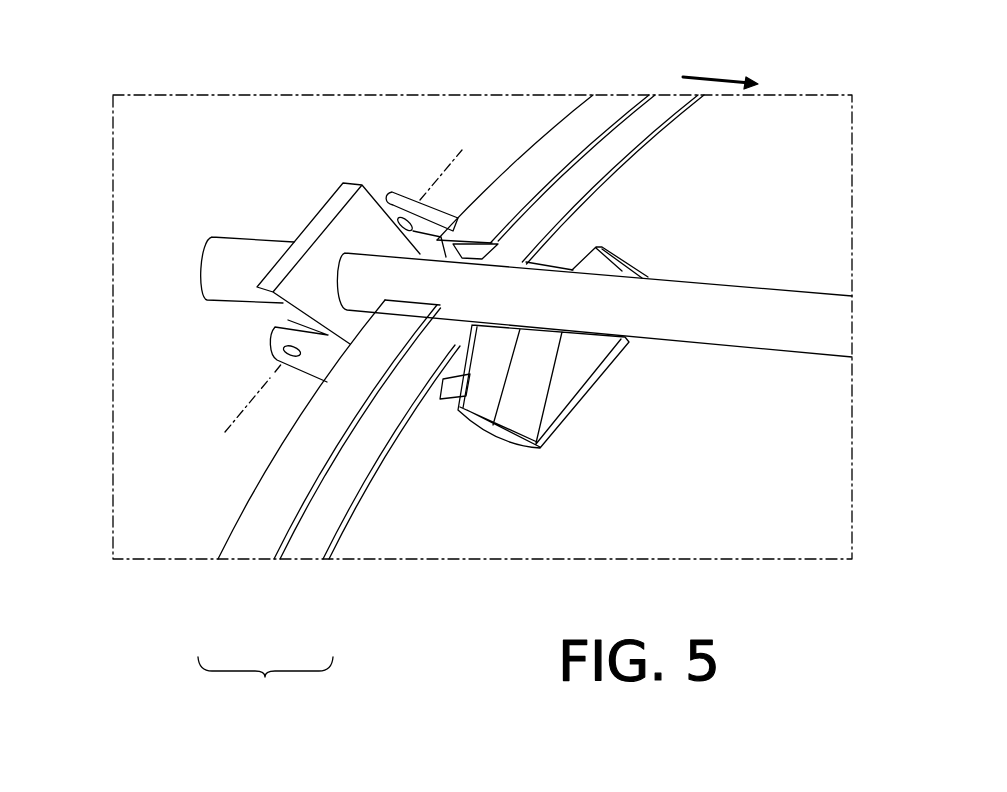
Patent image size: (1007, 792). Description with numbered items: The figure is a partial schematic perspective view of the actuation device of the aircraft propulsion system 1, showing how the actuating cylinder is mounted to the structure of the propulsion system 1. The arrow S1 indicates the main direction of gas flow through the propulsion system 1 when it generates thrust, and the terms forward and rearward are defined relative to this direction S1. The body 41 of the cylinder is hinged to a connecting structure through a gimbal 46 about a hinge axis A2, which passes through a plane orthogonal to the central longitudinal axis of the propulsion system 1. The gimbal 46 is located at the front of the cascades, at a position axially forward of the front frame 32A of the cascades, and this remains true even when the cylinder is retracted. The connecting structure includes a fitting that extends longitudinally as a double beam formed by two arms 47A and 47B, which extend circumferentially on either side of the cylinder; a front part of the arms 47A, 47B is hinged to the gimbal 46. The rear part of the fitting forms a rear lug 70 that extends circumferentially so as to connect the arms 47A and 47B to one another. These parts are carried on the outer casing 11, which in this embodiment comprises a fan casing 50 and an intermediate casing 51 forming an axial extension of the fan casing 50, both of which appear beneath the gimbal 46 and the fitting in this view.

The aircraft propulsion system 1 is at (200, 86).
The outer casing 11 is at (265, 680).
The front frame 32A is at (529, 165).
The body 41 is at (758, 330).
The gimbal 46 is at (321, 194).
The arm 47A is at (438, 407).
The arm 47B is at (557, 260).
The fan casing 50 is at (191, 526).
The intermediate casing 51 is at (400, 535).
The rear lug 70 is at (568, 386).
The hinge axis A2 is at (253, 398).
The main direction of gas flow S1 is at (719, 78).